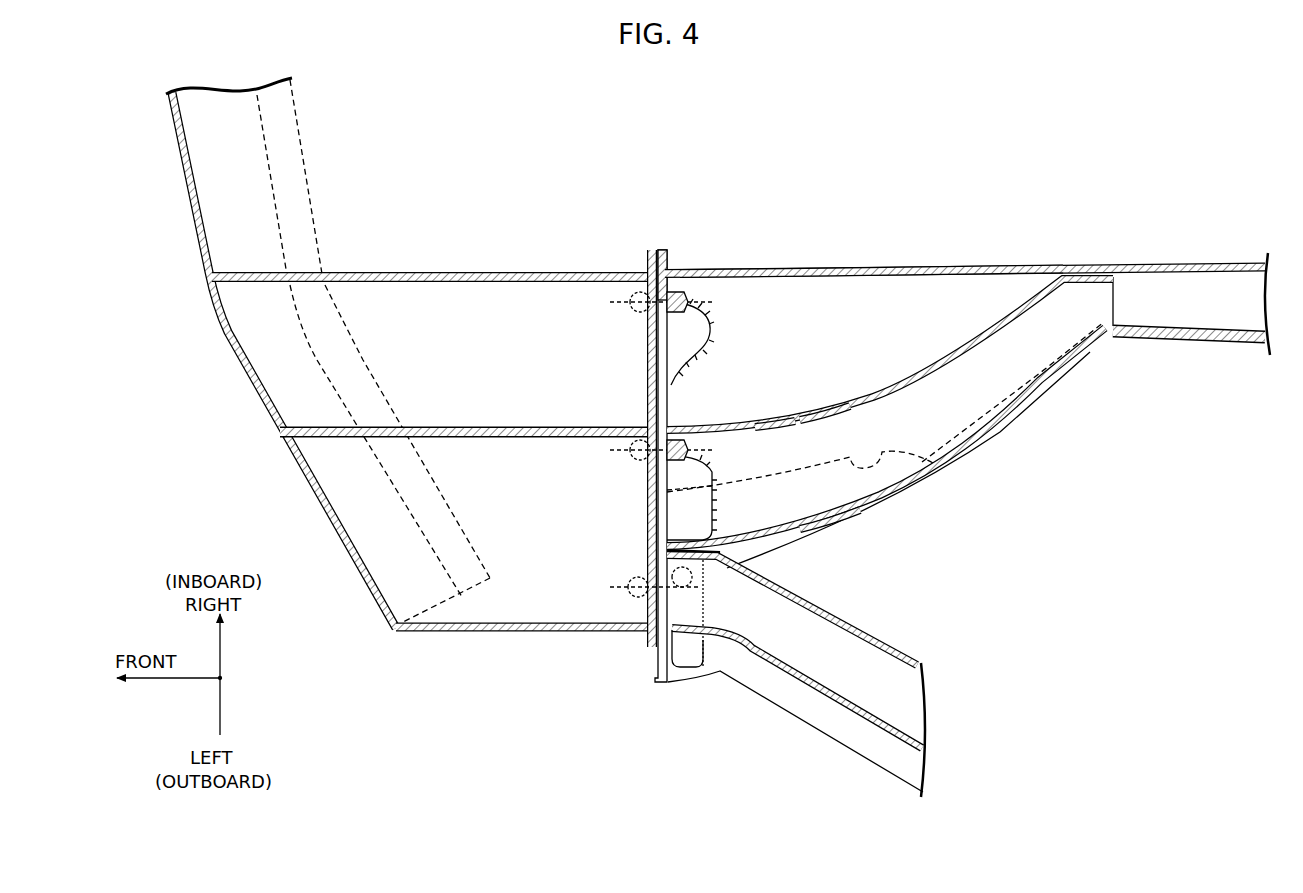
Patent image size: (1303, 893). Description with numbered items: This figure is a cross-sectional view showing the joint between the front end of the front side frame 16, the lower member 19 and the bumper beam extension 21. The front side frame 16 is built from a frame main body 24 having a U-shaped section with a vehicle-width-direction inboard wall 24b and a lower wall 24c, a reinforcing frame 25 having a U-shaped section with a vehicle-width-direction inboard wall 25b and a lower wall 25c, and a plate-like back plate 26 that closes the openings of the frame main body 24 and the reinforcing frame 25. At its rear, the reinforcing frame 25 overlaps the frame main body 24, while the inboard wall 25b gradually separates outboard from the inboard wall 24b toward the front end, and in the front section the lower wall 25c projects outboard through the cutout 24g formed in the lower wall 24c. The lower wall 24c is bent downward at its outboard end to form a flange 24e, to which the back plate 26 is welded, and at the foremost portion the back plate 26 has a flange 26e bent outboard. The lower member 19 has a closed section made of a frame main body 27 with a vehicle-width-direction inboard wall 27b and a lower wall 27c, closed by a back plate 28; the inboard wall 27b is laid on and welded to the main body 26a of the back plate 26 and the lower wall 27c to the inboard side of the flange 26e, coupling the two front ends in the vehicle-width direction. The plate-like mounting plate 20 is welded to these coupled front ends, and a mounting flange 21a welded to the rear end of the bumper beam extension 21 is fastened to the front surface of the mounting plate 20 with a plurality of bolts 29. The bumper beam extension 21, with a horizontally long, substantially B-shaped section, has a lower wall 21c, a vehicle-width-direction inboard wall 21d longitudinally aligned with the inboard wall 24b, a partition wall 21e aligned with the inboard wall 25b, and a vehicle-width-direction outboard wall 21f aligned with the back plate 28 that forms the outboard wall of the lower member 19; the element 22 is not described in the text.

The front side frame 16 is at (967, 383).
The lower member 19 is at (848, 668).
The mounting plate 20 is at (664, 420).
The bumper beam extension 21 is at (354, 390).
The mounting flange 21a is at (645, 364).
The lower wall 21c is at (430, 310).
The vehicle-width-direction inboard wall 21d is at (480, 272).
The partition wall 21e is at (510, 425).
The vehicle-width-direction outboard wall 21f is at (505, 632).
The center pillar 22 is at (192, 258).
The frame main body 24 is at (967, 337).
The vehicle-width-direction inboard wall 24b is at (775, 270).
The lower wall 24c is at (850, 290).
The flange 24e is at (1023, 394).
The cutout 24g is at (884, 455).
The reinforcing frame 25 is at (890, 362).
The vehicle-width-direction inboard wall 25b is at (770, 422).
The lower wall 25c is at (822, 445).
The back plate 26 is at (886, 477).
The main body 26a is at (838, 515).
The flange 26e is at (773, 556).
The frame main body 27 is at (834, 668).
The vehicle-width-direction inboard wall 27b is at (817, 603).
The lower wall 27c is at (893, 697).
The back plate 28 is at (833, 705).
The bolts 29 is at (630, 300).